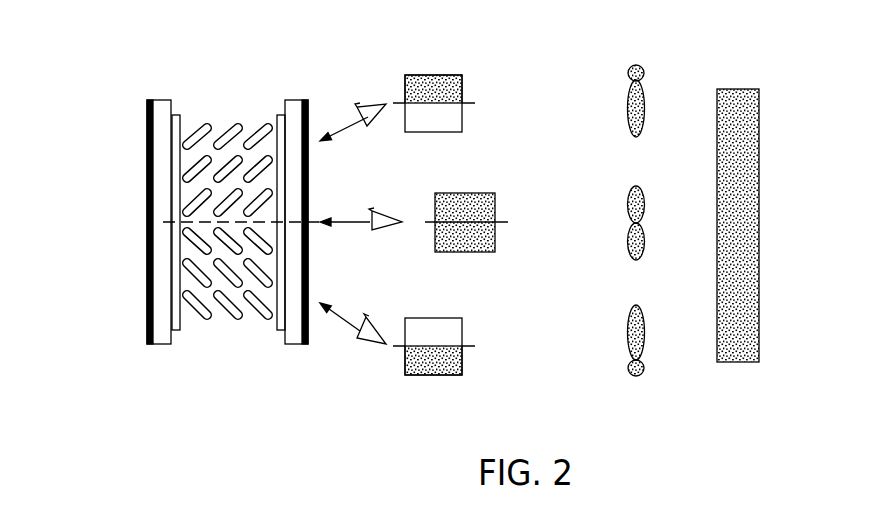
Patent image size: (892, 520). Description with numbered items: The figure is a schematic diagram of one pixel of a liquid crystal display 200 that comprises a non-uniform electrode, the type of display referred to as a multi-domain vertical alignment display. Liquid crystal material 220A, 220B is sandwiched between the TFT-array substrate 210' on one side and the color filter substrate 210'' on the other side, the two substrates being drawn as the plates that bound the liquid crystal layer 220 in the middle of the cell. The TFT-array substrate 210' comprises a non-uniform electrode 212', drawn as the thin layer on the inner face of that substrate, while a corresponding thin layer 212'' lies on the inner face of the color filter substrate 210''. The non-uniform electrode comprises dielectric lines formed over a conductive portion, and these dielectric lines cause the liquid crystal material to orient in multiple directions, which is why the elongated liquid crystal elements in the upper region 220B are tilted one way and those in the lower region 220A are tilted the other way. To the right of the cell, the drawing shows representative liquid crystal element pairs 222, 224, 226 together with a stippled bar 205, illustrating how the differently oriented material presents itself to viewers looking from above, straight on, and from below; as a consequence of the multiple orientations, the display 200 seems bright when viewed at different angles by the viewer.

The liquid crystal display 200 is at (110, 178).
The light source / backlight 205 is at (795, 230).
The TFT-array substrate 210' is at (160, 190).
The color filter substrate 210'' is at (295, 190).
The non-uniform electrode 212' is at (176, 256).
The second substrate 212'' is at (278, 256).
The liquid crystal layer 220 is at (190, 238).
The liquid crystal material 220A is at (222, 306).
The liquid crystal material 220B is at (233, 105).
The liquid crystal molecule pair 222 is at (634, 239).
The liquid crystal molecule (upper) 224 is at (643, 107).
The liquid crystal molecule (lower) 226 is at (636, 376).